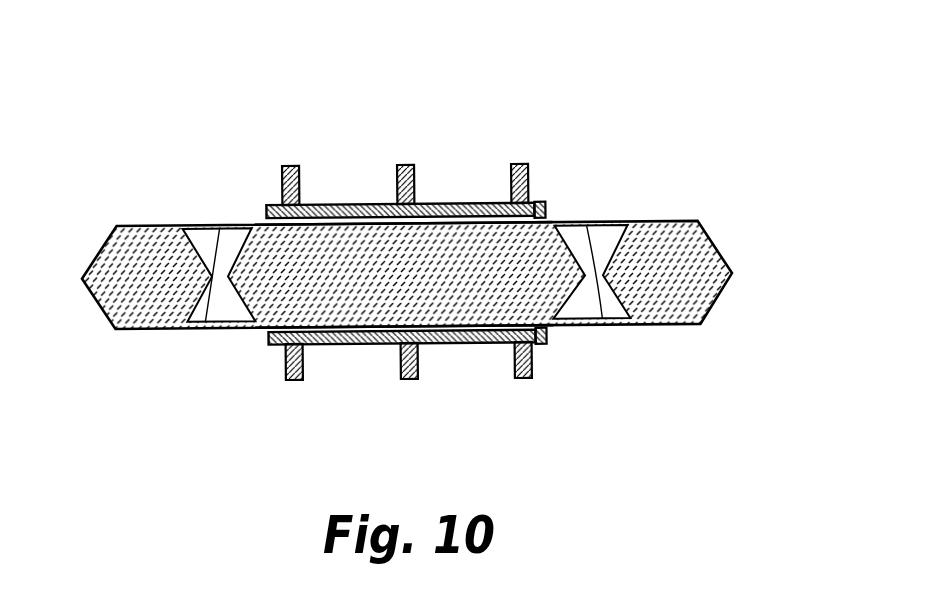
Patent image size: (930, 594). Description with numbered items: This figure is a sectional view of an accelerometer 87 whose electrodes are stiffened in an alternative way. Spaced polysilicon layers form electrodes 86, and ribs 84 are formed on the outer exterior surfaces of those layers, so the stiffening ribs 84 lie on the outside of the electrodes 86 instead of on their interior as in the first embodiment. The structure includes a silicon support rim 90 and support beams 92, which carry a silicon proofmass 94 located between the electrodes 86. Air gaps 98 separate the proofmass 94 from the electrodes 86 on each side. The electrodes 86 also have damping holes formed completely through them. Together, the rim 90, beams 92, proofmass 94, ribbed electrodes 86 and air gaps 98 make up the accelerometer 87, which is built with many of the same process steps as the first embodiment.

The accelerometer 87 is at (600, 63).
The silicon support rim 90 is at (135, 288).
The silicon proofmass 94 is at (263, 247).
The support beams 92 is at (205, 320).
The electrodes 86 is at (266, 206).
The air gaps 98 is at (539, 203).
The ribs 84 is at (512, 182).